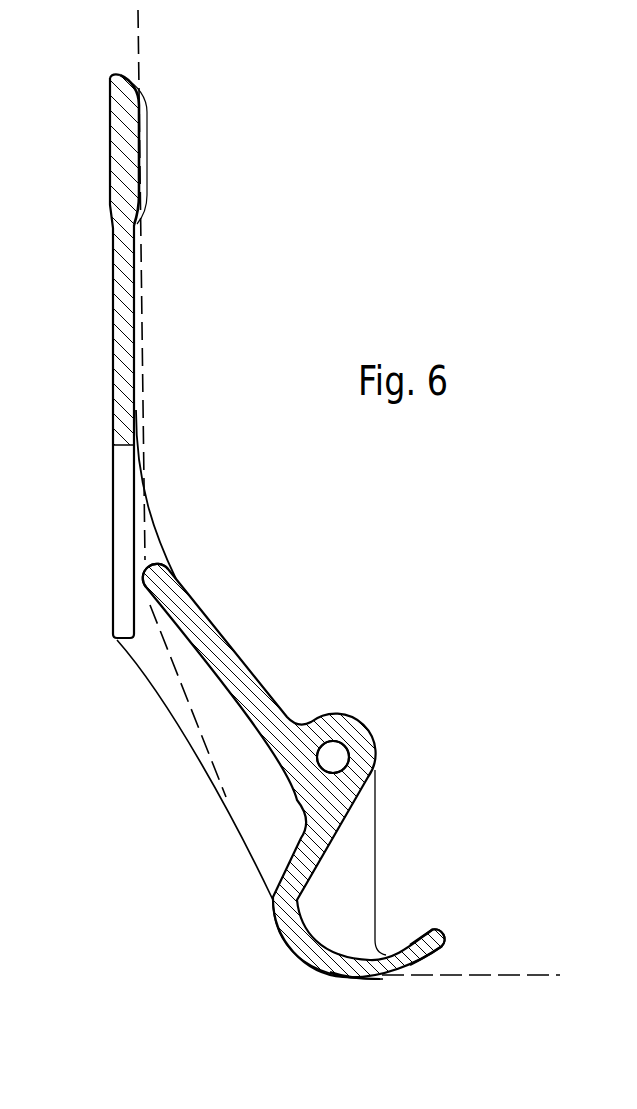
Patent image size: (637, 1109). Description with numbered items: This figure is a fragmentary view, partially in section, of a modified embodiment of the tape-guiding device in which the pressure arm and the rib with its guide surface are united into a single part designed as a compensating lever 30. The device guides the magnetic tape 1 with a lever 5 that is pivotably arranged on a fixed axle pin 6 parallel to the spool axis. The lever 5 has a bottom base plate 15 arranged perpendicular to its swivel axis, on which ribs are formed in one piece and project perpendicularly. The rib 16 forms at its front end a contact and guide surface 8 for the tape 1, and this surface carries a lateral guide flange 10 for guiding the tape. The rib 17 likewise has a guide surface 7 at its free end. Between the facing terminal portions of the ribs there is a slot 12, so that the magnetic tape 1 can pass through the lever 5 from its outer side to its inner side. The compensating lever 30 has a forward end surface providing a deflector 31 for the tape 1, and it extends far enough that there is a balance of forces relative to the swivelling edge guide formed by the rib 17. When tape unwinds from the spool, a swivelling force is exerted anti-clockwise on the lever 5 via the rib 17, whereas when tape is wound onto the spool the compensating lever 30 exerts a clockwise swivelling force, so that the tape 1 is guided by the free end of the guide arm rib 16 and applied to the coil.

The magnetic tape 1 is at (513, 977).
The lever 5 is at (118, 391).
The axle pin 6 is at (341, 753).
The guide surface 7 is at (347, 978).
The contact and guide surface 8 is at (131, 137).
The lateral guide flange 10 is at (143, 161).
The slot 12 is at (147, 632).
The base plate 15 is at (362, 862).
The rib 16 is at (123, 373).
The rib 17 is at (357, 967).
The compensating lever 30 is at (243, 683).
The deflector 31 is at (152, 586).